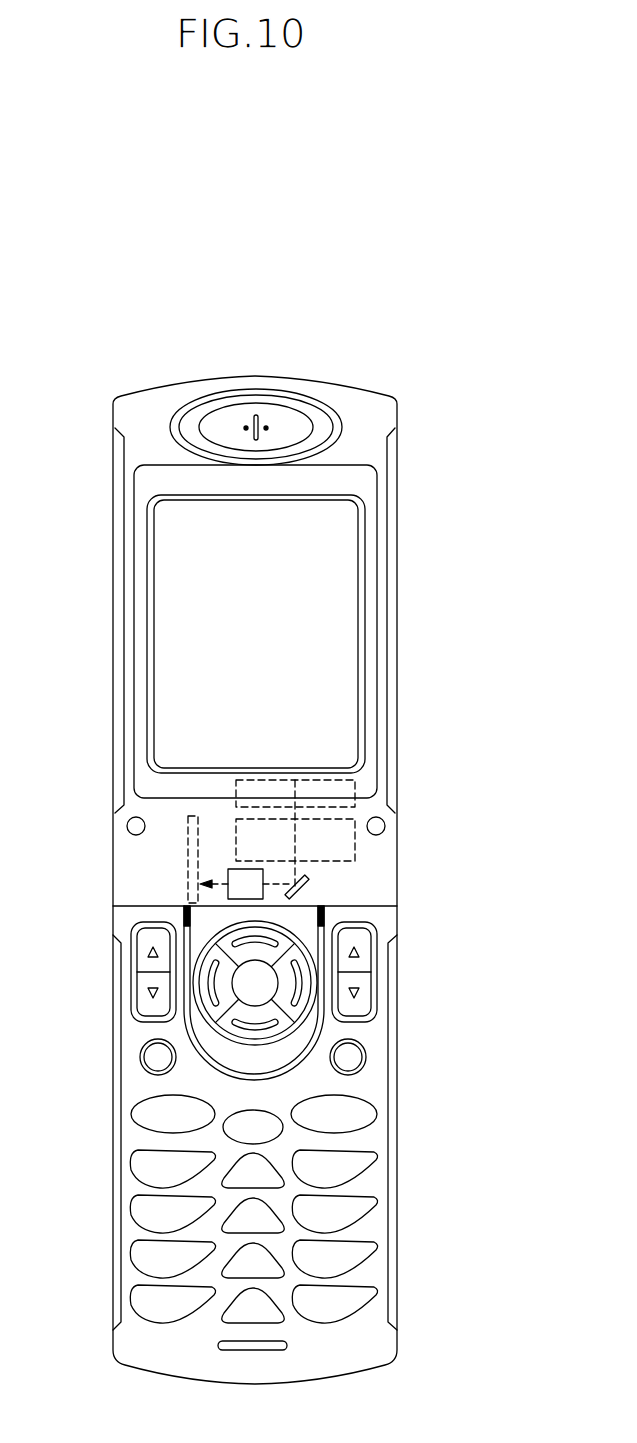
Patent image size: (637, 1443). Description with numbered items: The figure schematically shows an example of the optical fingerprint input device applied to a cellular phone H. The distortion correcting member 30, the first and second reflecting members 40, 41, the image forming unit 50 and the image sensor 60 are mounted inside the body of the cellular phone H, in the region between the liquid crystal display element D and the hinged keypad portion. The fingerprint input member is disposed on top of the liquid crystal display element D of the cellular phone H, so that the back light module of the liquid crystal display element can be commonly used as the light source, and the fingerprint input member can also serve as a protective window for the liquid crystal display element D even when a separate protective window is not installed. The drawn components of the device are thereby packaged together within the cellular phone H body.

The cellular phone H is at (111, 1051).
The display D is at (172, 545).
The distortion correcting member 30 is at (342, 789).
The first reflecting member 40 is at (347, 846).
The second reflecting member 41 is at (300, 892).
The image forming unit 50 is at (230, 869).
The image sensor 60 is at (188, 856).